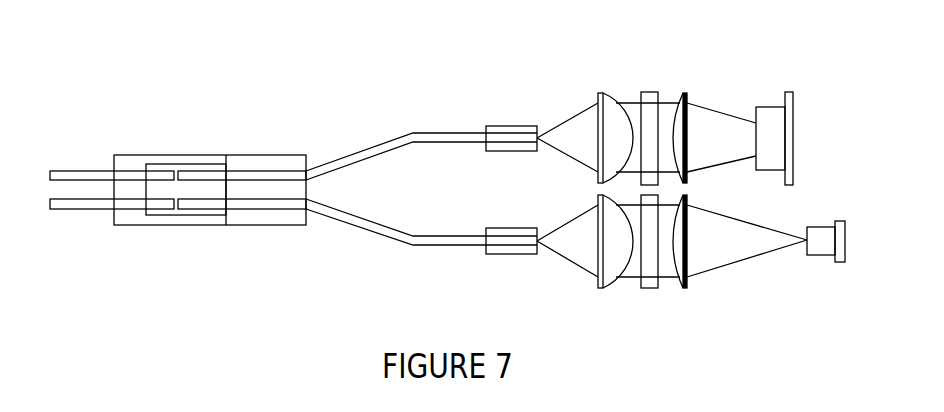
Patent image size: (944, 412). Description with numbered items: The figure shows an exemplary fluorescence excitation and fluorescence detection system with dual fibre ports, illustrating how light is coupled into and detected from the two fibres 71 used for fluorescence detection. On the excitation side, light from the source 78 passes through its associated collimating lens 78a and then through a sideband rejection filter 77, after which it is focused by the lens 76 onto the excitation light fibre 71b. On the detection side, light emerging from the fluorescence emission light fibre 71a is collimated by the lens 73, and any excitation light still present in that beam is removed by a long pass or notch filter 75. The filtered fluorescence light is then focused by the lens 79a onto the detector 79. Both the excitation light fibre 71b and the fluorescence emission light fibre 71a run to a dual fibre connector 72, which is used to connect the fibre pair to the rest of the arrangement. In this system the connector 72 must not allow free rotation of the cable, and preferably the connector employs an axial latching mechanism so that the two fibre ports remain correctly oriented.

The fibres 71 is at (77, 203).
The dual fibre connector 72 is at (137, 225).
The fluorescence emission light fibre 71a is at (348, 160).
The excitation light fibre 71b is at (350, 218).
The lens 73 is at (598, 93).
The long pass or notch filter 75 is at (645, 92).
The lens 79a is at (685, 93).
The detector 79 is at (788, 92).
The lens 76 is at (603, 288).
The sideband rejection filter 77 is at (648, 288).
The collimating lens 78a is at (685, 288).
The source 78 is at (823, 255).